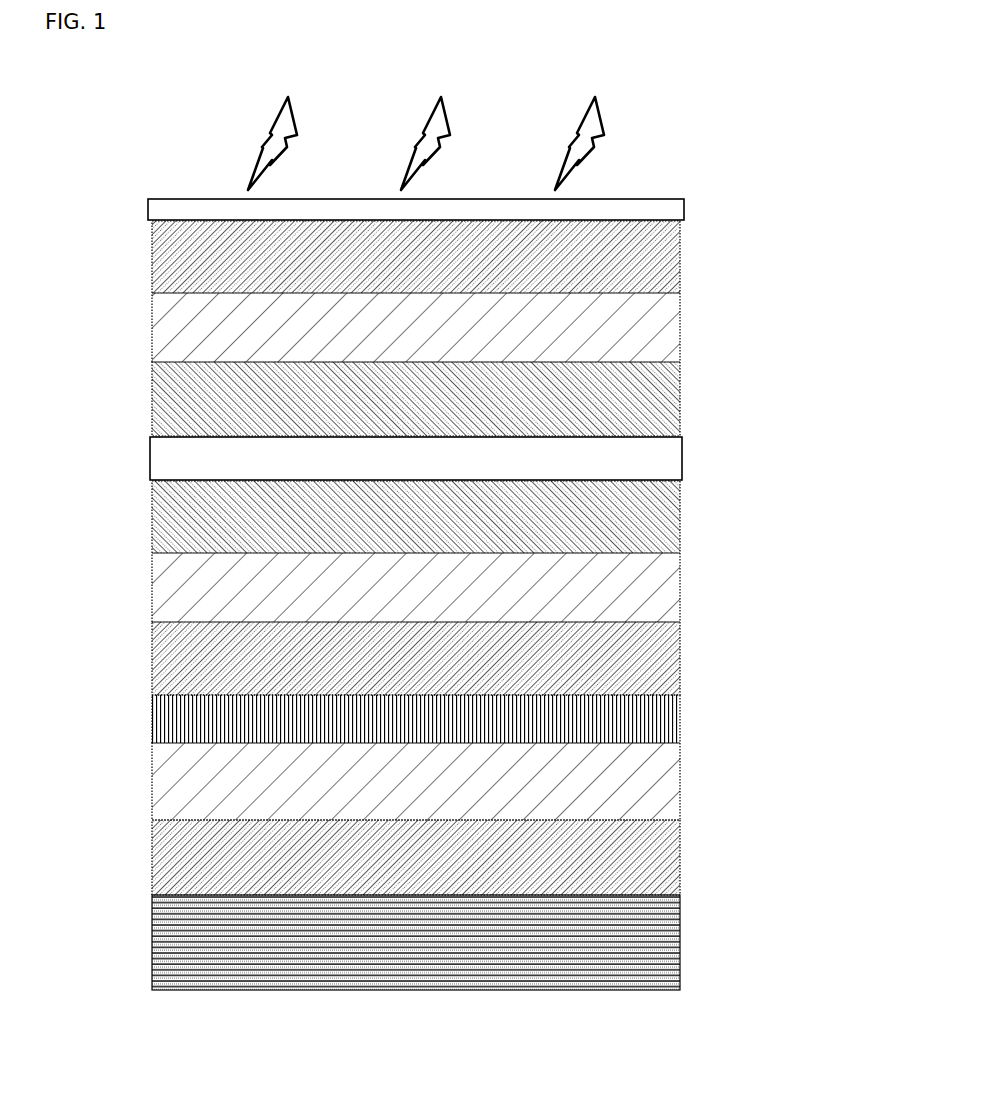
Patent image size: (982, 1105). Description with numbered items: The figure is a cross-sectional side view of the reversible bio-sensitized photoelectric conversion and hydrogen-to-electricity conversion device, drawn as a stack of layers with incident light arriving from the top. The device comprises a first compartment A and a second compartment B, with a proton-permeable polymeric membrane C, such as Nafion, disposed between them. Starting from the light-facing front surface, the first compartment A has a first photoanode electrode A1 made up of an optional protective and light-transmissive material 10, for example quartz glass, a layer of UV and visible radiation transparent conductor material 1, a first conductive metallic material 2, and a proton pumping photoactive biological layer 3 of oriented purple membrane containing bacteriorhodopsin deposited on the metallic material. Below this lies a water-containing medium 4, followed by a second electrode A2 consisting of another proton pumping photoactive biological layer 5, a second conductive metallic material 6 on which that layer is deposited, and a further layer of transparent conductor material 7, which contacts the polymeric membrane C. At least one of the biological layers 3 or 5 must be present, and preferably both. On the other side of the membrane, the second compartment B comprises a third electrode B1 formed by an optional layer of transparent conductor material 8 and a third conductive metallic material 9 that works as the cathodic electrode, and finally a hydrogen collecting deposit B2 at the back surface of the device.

The protective and light-transmissive material 10 is at (700, 209).
The layer of UV and visible radiation transparent conductor material 1 is at (700, 263).
The first conductive metallic material 2 is at (700, 333).
The proton pumping photoactive biological layer 3 is at (700, 396).
The water-containing medium 4 is at (700, 459).
The proton pumping photoactive biological layer 5 is at (700, 517).
The second conductive metallic material 6 is at (700, 584).
The layer of UV and visible radiation transparent conductor material 7 is at (700, 660).
The layer of UV and visible radiation transparent conductor material 8 is at (700, 777).
The third conductive metallic material 9 is at (700, 865).
The first compartment A is at (113, 195).
The first photoanode electrode A1 is at (815, 226).
The second electrode A2 is at (815, 480).
The second compartment B is at (113, 993).
The third electrode B1 is at (811, 745).
The hydrogen collecting deposit B2 is at (829, 897).
The polymeric membrane C is at (92, 695).